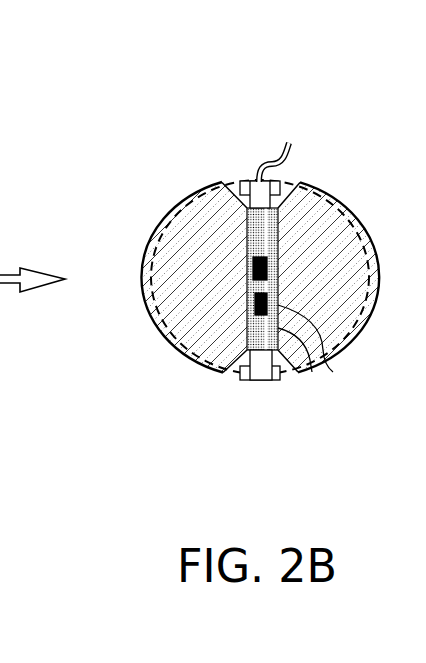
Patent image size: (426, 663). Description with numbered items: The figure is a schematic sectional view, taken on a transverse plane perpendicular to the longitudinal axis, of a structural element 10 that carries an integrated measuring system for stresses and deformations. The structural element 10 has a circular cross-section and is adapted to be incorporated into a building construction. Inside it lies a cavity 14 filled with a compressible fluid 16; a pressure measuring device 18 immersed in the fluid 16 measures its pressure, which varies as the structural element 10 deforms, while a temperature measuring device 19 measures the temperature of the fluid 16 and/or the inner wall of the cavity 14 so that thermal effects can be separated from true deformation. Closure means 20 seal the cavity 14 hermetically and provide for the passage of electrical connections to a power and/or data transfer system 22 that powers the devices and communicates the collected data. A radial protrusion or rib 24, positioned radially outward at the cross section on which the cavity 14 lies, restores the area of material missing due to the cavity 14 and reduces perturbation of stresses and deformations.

The structural element 10 is at (198, 238).
The cavity 14 is at (312, 372).
The compressible fluid 16 is at (333, 372).
The pressure measuring device 18 is at (253, 268).
The temperature measuring device 19 is at (247, 292).
The closure means 20 is at (250, 178).
The power and/or data transfer system 22 is at (290, 137).
The radial protrusion or rib 24 is at (367, 237).